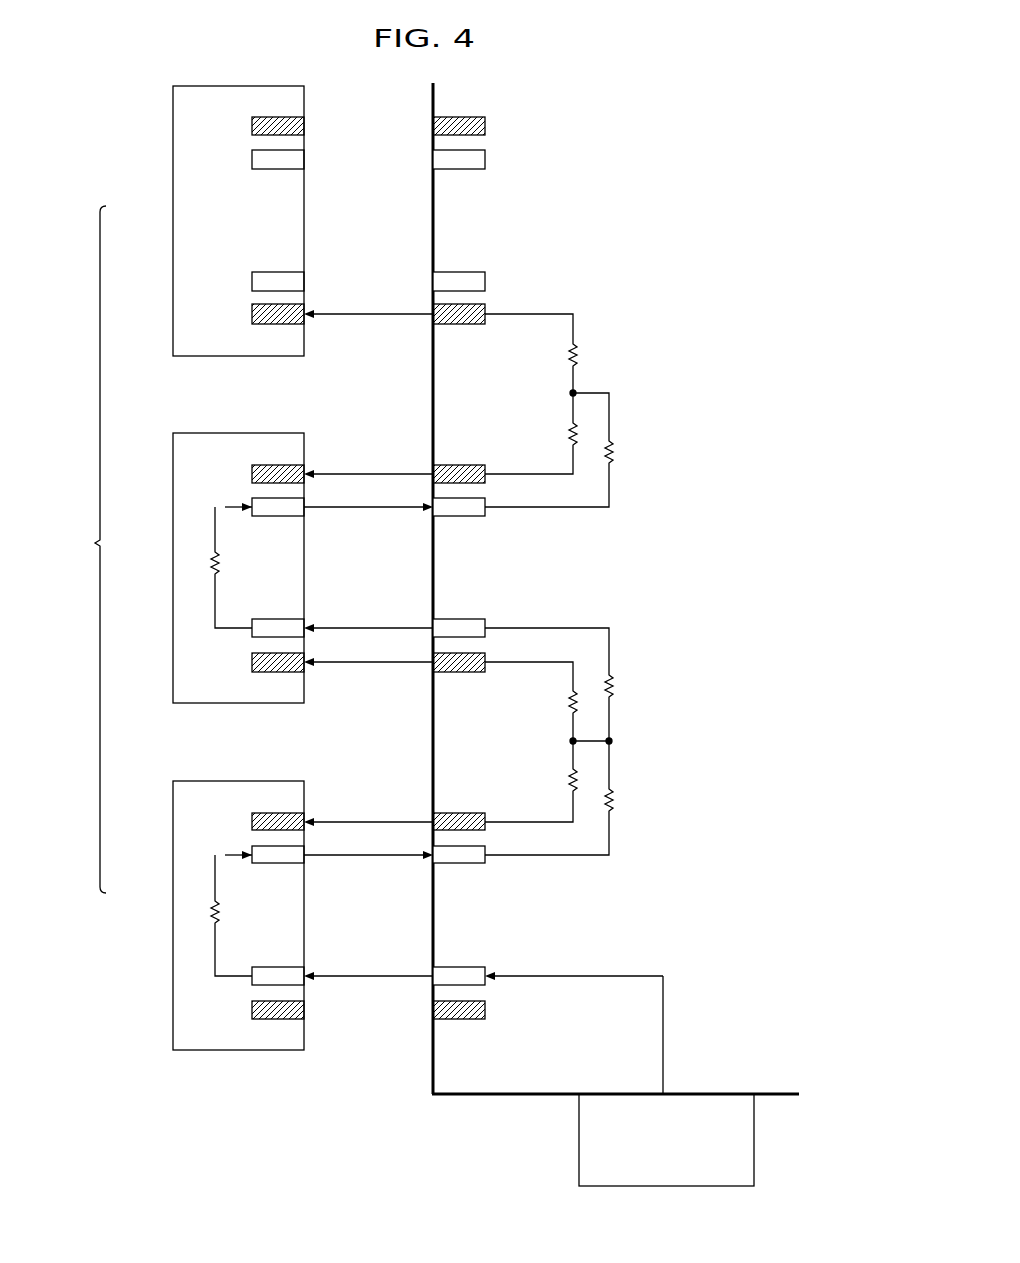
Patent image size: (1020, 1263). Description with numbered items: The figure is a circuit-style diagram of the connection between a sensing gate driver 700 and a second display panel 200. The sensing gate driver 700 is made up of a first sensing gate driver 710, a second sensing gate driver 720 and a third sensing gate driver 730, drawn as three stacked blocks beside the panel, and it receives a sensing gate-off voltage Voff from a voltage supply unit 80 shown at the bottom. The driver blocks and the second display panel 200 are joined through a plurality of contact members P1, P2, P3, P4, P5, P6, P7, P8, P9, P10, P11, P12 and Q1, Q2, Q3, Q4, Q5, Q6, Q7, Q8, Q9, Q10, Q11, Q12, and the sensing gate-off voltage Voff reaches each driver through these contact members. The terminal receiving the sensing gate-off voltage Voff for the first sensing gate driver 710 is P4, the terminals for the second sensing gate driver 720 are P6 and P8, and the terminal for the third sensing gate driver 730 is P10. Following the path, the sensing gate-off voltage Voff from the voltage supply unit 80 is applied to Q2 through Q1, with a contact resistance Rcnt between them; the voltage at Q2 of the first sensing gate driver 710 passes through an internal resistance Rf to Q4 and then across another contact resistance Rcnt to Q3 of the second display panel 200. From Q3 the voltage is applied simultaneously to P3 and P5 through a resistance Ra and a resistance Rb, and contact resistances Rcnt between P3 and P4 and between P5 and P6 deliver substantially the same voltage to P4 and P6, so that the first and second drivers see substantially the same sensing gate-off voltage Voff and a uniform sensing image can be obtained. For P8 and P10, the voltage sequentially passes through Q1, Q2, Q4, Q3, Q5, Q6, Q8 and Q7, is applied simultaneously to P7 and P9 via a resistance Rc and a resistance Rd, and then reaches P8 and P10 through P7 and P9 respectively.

The sensing gate driver 700 is at (181, 568).
The first sensing gate driver 710 is at (173, 870).
The second sensing gate driver 720 is at (173, 610).
The third sensing gate driver 730 is at (173, 228).
The second display panel 200 is at (431, 1080).
The voltage supply unit 80 is at (579, 1167).
The contact resistance Rcnt is at (368, 645).
The sensing gate-off voltage Voff is at (574, 1022).
The resistance Ra is at (563, 741).
The resistance Rb is at (547, 742).
The resistance Rc is at (563, 450).
The resistance Rd is at (531, 394).
The internal resistance Rf is at (219, 565).
The contact member P1 is at (453, 1019).
The contact member P2 is at (252, 1010).
The contact member P3 is at (475, 813).
The contact member P4 is at (252, 822).
The contact member P5 is at (453, 672).
The contact member P6 is at (252, 662).
The contact member P7 is at (475, 465).
The contact member P8 is at (252, 474).
The contact member P9 is at (453, 324).
The contact member P10 is at (252, 314).
The contact member P11 is at (485, 124).
The contact member P12 is at (252, 124).
The contact member Q1 is at (447, 967).
The contact member Q2 is at (285, 967).
The contact member Q3 is at (477, 863).
The contact member Q4 is at (257, 863).
The contact member Q5 is at (447, 619).
The contact member Q6 is at (285, 619).
The contact member Q7 is at (477, 516).
The contact member Q8 is at (257, 516).
The contact member Q9 is at (447, 272).
The contact member Q10 is at (252, 281).
The contact member Q11 is at (485, 159).
The contact member Q12 is at (252, 159).